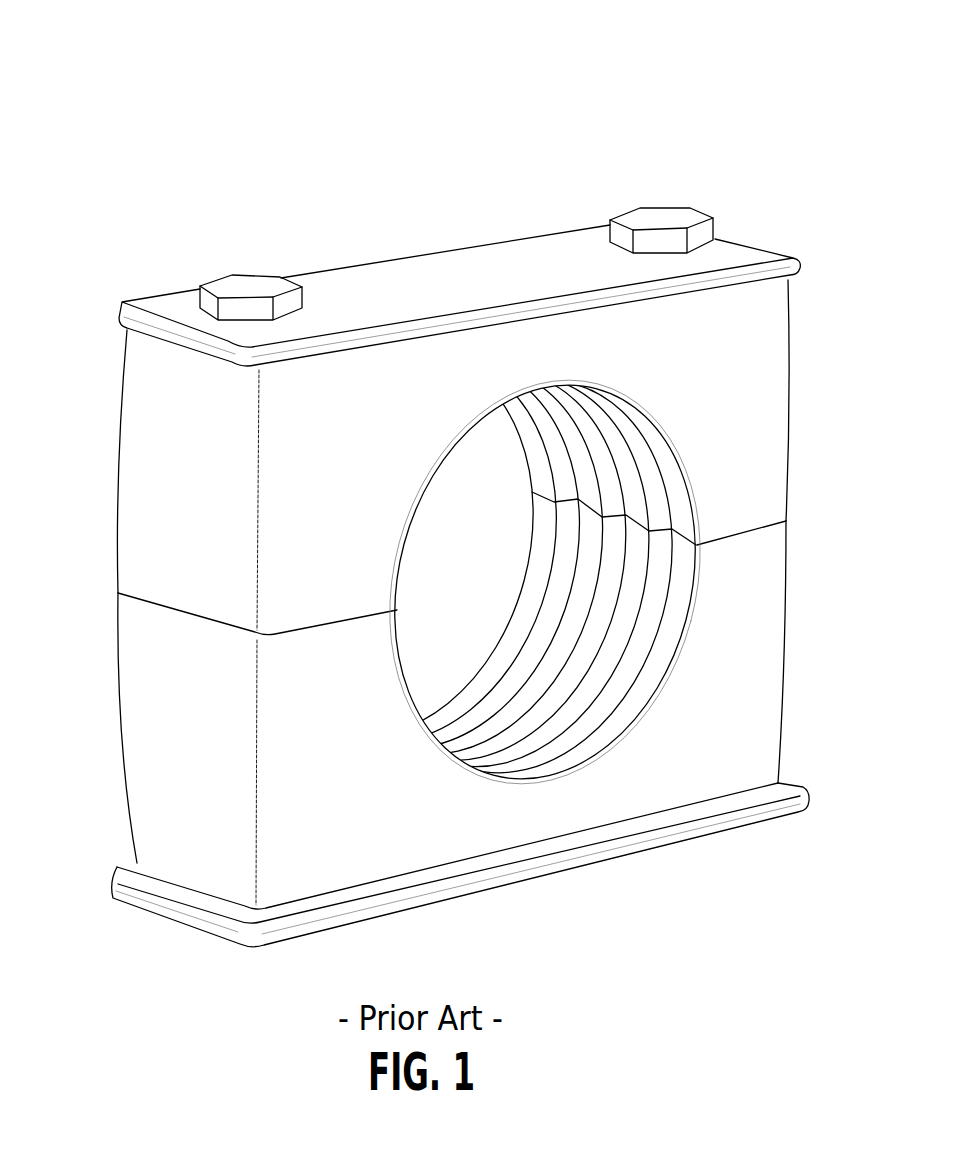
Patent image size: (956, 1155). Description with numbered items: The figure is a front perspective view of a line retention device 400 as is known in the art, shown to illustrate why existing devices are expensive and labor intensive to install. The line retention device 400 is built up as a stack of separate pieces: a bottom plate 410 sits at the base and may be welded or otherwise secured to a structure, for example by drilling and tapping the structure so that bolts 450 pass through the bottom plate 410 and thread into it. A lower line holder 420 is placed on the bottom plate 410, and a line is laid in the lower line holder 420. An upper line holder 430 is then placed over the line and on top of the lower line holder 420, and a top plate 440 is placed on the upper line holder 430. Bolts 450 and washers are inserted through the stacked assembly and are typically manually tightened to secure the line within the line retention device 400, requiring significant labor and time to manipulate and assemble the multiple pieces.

The line retention device 400 is at (164, 60).
The bottom plate 410 is at (123, 888).
The lower line holder 420 is at (150, 710).
The upper line holder 430 is at (150, 482).
The top plate 440 is at (130, 317).
The bolts 450 is at (222, 286).